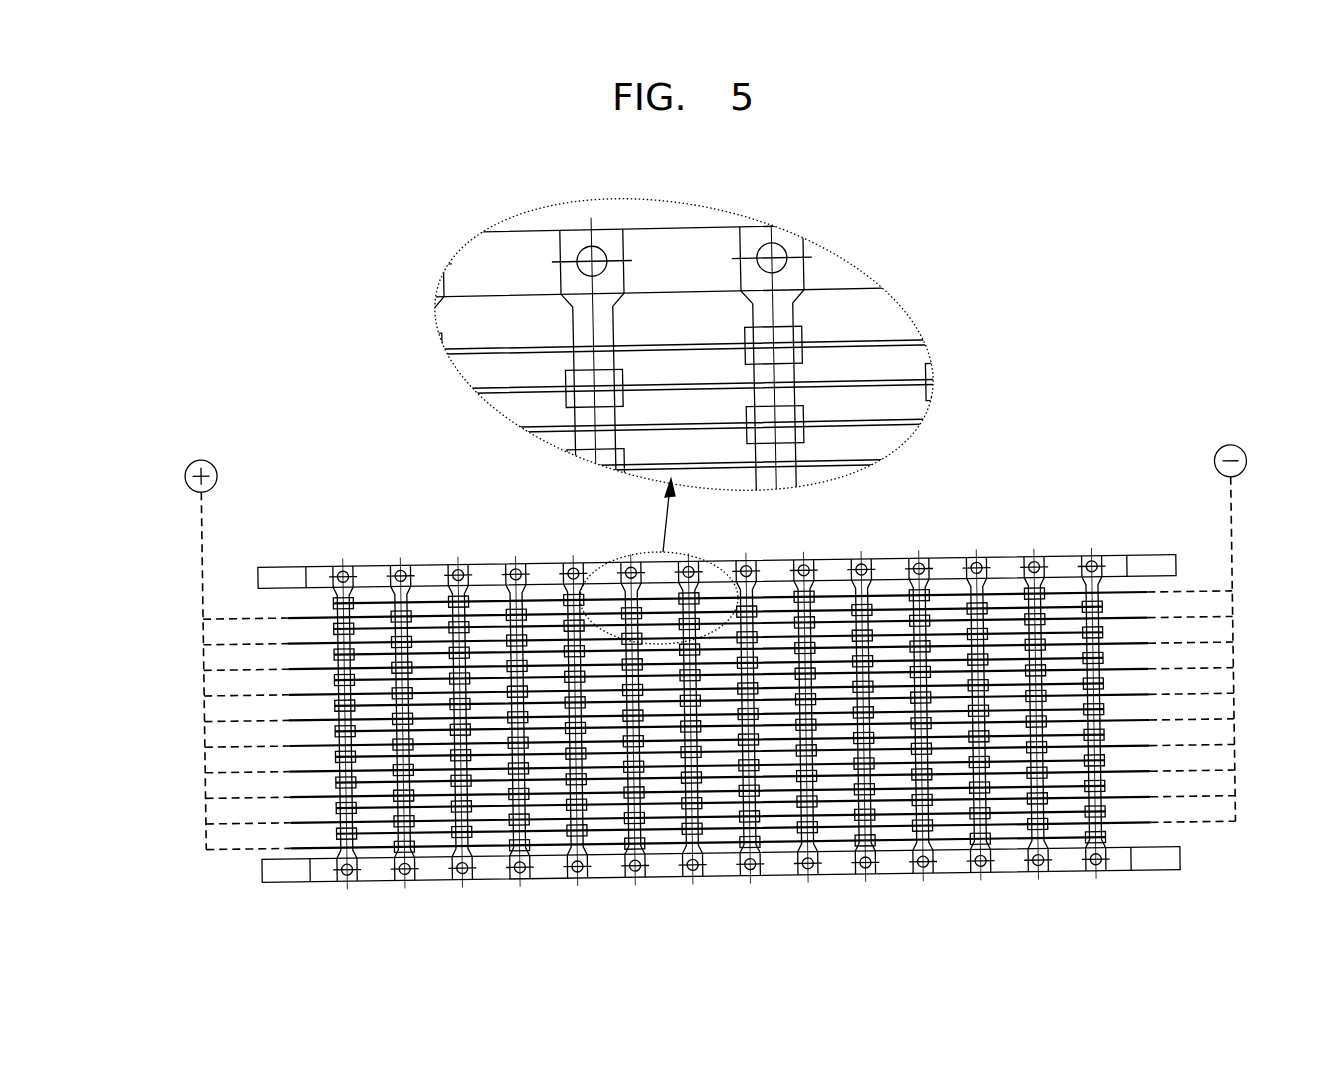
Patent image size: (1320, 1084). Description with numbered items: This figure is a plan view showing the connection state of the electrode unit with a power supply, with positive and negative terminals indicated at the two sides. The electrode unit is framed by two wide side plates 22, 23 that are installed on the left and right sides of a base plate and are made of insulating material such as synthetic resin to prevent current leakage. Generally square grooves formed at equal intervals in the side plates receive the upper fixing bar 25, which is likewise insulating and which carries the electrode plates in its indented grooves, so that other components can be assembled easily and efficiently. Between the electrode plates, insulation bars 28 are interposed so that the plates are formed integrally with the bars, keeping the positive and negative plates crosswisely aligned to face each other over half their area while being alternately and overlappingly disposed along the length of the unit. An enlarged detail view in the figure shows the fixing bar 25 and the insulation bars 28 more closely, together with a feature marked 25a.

The side plate 22 is at (490, 563).
The side plate 23 is at (500, 874).
The upper fixing bar 25 is at (923, 555).
The electrode tab 25a is at (980, 555).
The insulation bar 28 is at (783, 338).